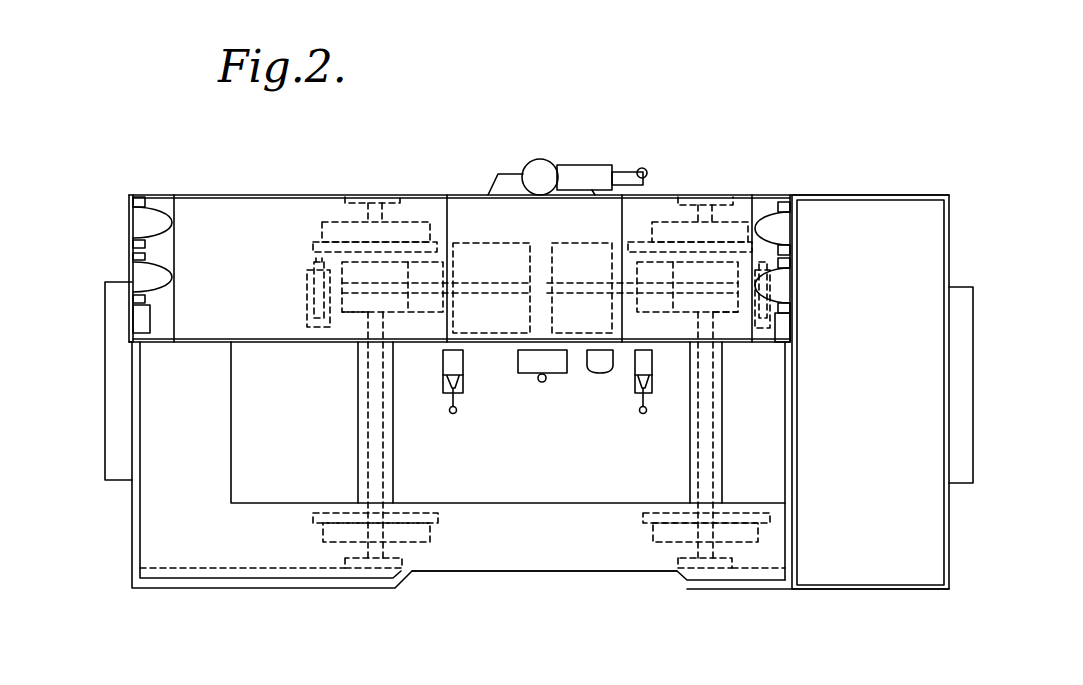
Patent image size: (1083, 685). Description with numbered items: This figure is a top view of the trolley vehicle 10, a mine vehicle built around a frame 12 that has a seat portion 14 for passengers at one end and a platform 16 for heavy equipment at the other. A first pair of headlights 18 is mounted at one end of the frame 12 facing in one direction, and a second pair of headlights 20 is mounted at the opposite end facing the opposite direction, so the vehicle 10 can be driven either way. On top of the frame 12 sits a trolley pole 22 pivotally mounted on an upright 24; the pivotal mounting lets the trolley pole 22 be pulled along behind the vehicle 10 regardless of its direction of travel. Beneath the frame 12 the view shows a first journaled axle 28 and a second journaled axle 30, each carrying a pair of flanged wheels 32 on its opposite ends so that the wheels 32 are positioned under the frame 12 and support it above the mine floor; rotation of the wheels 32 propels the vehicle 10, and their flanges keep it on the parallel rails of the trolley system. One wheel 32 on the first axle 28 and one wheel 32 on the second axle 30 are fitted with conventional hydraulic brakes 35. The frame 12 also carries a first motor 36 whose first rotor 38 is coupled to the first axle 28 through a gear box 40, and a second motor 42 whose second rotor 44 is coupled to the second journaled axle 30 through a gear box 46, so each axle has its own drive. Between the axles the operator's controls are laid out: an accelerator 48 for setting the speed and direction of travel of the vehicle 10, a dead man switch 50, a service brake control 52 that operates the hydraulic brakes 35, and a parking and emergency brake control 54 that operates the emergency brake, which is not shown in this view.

The vehicle 10 is at (708, 129).
The frame 12 is at (281, 190).
The seat portion 14 is at (514, 541).
The platform 16 is at (862, 550).
The first pair of headlights 18 is at (158, 212).
The second pair of headlights 20 is at (770, 215).
The trolley pole 22 is at (631, 173).
The upright 24 is at (536, 166).
The first journaled axle 28 is at (368, 405).
The second journaled axle 30 is at (713, 395).
The flanged wheels 32 is at (418, 222).
The hydraulic brakes 35 is at (312, 298).
The first motor 36 is at (471, 243).
The first rotor 38 is at (476, 295).
The gear box 40 is at (353, 312).
The second motor 42 is at (611, 243).
The second rotor 44 is at (612, 295).
The gear box 46 is at (717, 312).
The accelerator 48 is at (530, 377).
The dead man switch 50 is at (603, 376).
The service brake control 52 is at (640, 414).
The parking and emergency brake control 54 is at (452, 413).